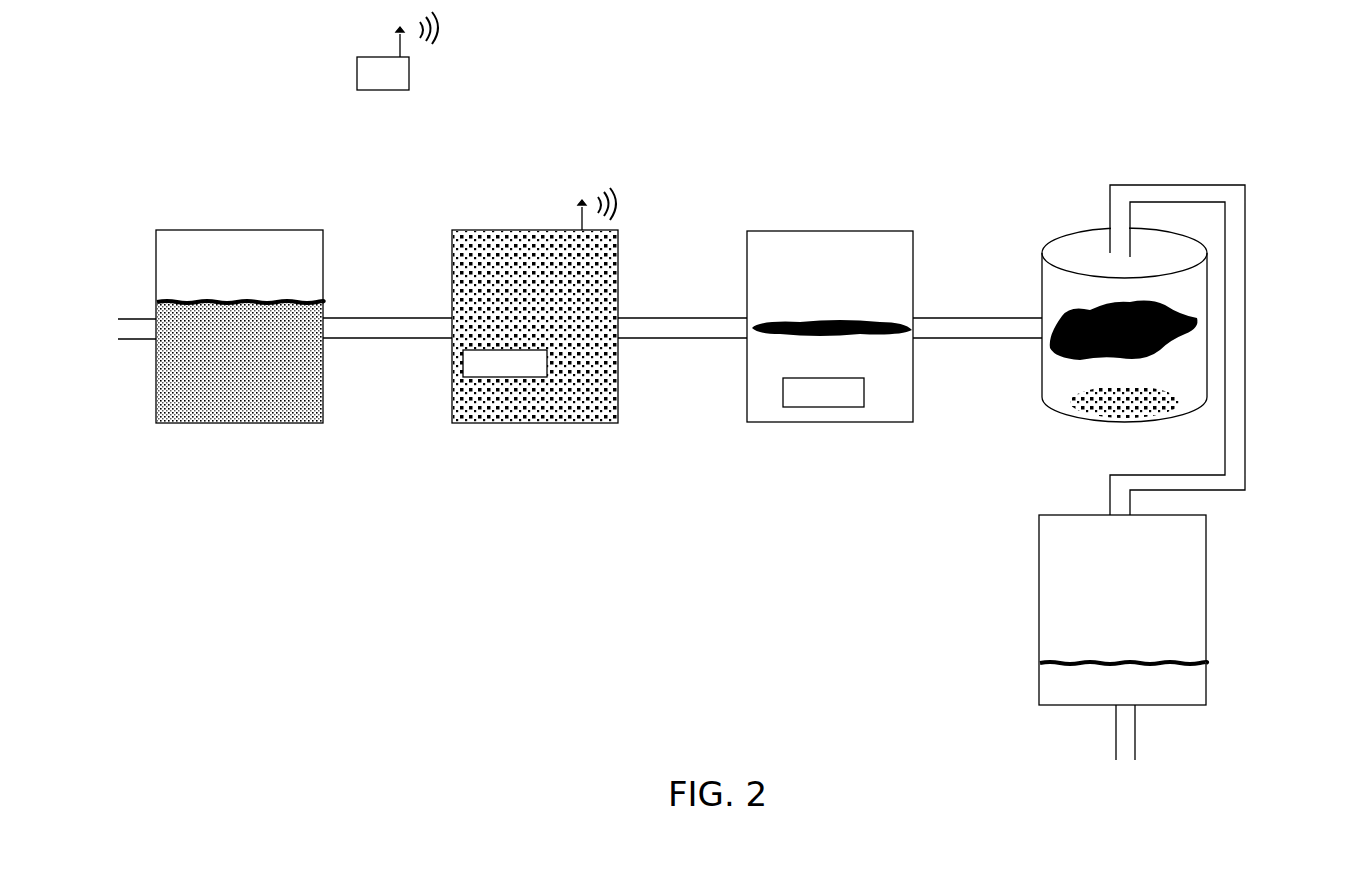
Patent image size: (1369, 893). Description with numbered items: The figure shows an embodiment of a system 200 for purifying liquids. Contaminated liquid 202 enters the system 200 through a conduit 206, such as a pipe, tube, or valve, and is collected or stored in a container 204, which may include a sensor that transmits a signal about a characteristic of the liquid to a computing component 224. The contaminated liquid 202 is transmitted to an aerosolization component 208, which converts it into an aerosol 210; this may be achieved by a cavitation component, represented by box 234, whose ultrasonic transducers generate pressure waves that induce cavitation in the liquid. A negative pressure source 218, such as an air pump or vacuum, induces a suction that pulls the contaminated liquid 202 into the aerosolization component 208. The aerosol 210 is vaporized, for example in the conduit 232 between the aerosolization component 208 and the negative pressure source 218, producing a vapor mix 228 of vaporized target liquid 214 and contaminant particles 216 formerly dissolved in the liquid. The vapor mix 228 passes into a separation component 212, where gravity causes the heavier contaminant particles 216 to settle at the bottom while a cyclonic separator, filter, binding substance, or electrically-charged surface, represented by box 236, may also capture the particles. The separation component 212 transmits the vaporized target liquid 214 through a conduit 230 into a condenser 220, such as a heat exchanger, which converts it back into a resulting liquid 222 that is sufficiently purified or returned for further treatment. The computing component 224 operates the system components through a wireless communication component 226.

The system 200 is at (145, 185).
The contaminated liquid 202 is at (234, 430).
The container 204 is at (256, 220).
The conduit 206 is at (134, 355).
The aerosolization component 208 is at (546, 220).
The aerosol 210 is at (520, 431).
The separation component 212 is at (1043, 415).
The vaporized target liquid 214 is at (1081, 296).
The contaminant particles 216 is at (1096, 425).
The negative pressure source 218 is at (741, 427).
The condenser 220 is at (1217, 626).
The resulting liquid 222 is at (1188, 688).
The computing component 224 is at (395, 75).
The communication component 226 is at (627, 195).
The vapor mix 228 is at (826, 310).
The conduit 230 is at (1262, 358).
The conduit 232 is at (674, 353).
The cavitation component 234 is at (460, 366).
The cyclonic separator, filter, substance, and/or electrically-charged surface 236 is at (820, 422).